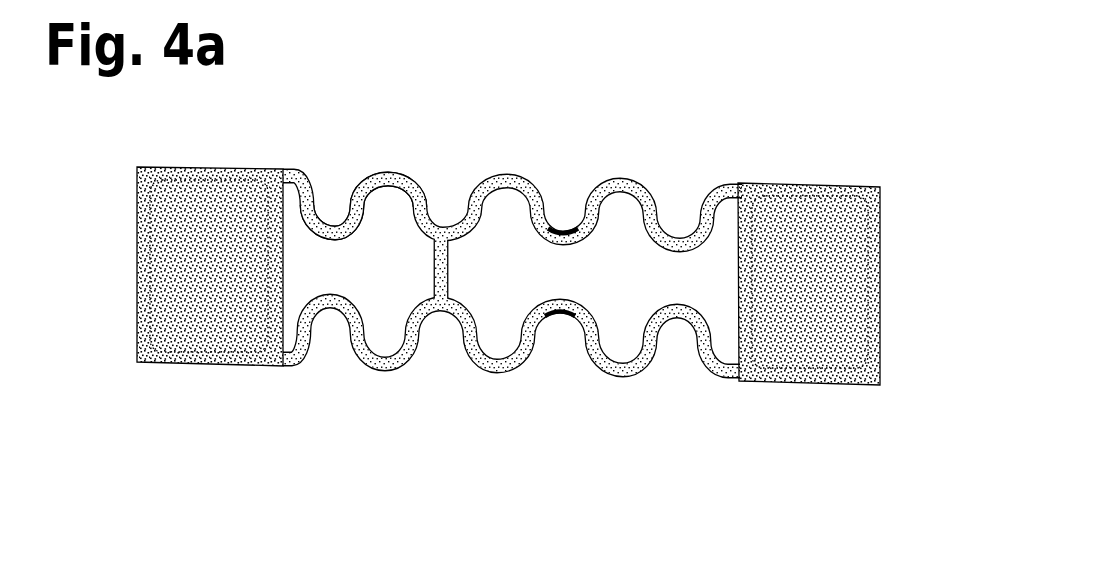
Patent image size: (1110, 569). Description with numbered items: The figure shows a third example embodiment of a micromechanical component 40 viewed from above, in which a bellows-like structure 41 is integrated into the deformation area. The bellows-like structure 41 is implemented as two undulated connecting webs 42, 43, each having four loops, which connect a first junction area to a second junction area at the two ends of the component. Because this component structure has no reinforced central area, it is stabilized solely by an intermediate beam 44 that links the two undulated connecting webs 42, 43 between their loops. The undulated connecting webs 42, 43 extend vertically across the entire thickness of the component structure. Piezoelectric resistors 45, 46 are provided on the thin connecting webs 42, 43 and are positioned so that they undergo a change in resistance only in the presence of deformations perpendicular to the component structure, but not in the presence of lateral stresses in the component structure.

The component 40 is at (680, 120).
The bellows-like structure 41 is at (480, 155).
The undulated connecting web 42 is at (502, 361).
The undulated connecting web 43 is at (367, 188).
The intermediate beam 44 is at (442, 297).
The piezoelectric resistor 45 is at (563, 316).
The piezoelectric resistor 46 is at (566, 229).